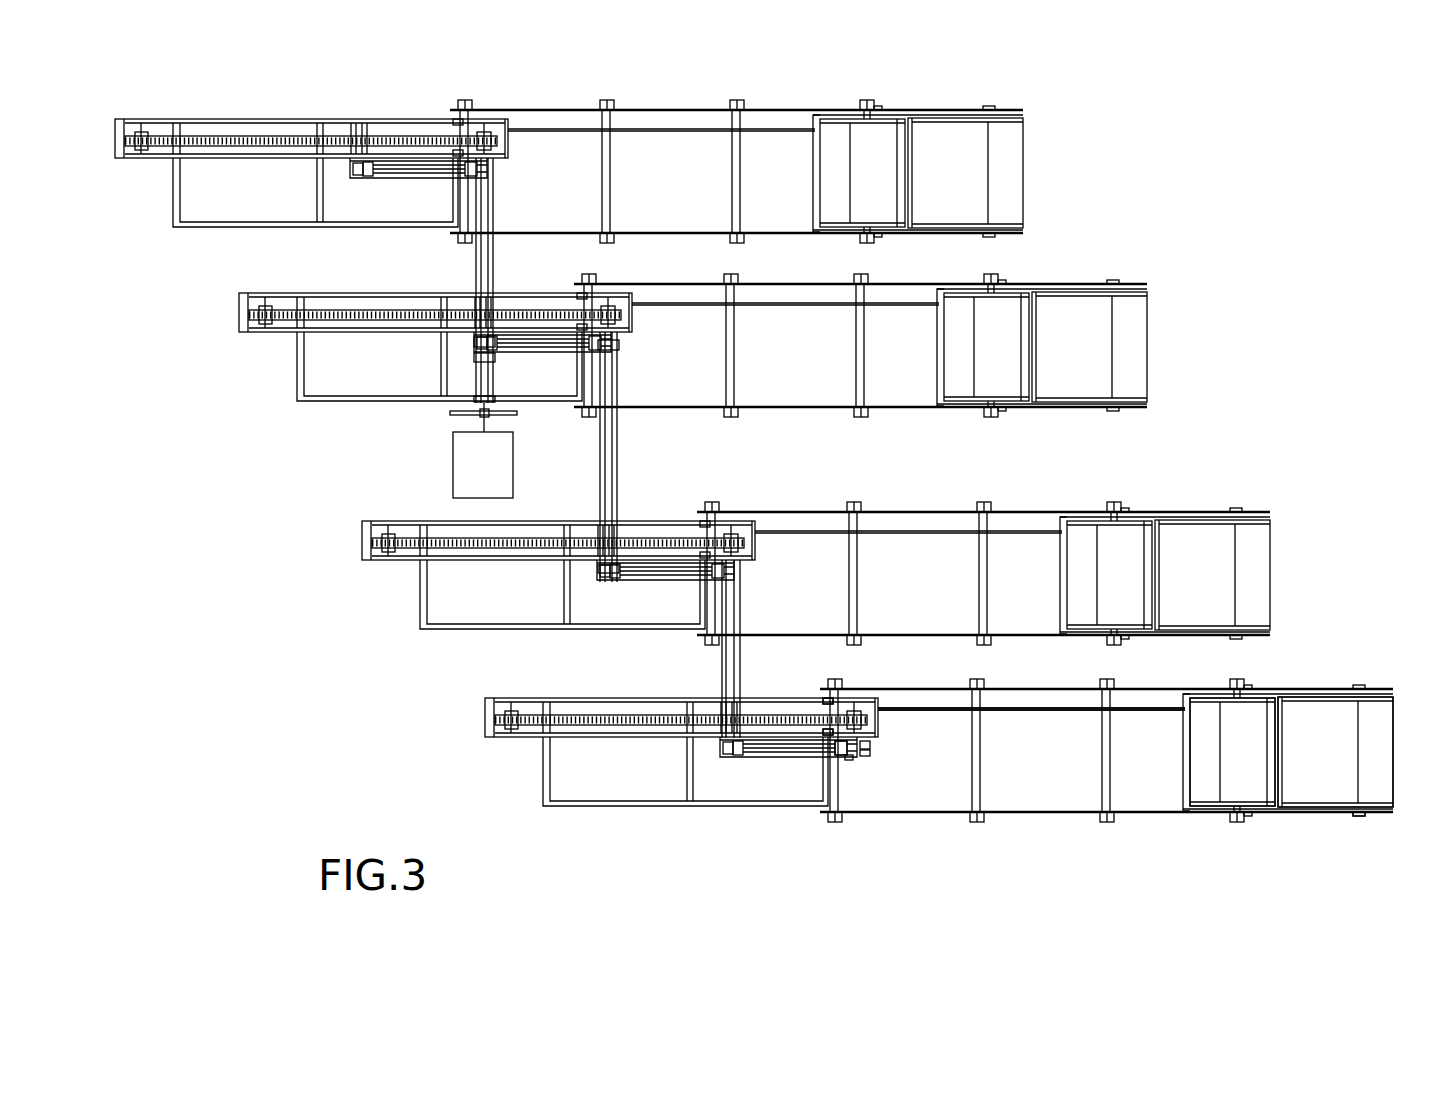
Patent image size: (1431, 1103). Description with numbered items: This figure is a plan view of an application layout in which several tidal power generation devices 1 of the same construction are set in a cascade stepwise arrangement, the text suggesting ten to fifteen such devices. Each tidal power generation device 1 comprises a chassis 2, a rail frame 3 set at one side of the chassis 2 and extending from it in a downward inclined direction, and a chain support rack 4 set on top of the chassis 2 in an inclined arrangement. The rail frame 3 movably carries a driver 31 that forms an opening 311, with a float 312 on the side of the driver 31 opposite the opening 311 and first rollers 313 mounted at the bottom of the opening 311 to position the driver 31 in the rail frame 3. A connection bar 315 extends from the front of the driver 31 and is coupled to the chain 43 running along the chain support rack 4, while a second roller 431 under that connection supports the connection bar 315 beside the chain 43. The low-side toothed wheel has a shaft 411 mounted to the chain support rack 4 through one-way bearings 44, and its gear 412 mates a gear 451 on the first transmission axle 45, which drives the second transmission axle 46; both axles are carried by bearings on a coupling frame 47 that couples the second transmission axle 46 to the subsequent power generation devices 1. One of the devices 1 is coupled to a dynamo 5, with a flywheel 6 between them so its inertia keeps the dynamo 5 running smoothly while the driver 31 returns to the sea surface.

The tidal power generation device 1 is at (283, 405).
The chassis 2 is at (563, 806).
The rail frame 3 is at (930, 813).
The driver 31 is at (1298, 808).
The opening 311 is at (1352, 757).
The float 312 is at (1230, 788).
The first rollers 313 is at (1358, 817).
The connection bar 315 is at (944, 706).
The chain support rack 4 is at (578, 698).
The chain 43 is at (626, 716).
The second roller 431 is at (826, 700).
The shaft 411 is at (869, 743).
The gear 412 is at (871, 752).
The one-way bearings 44 is at (858, 758).
The first transmission axle 45 is at (778, 757).
The gear 451 is at (843, 761).
The second transmission axle 46 is at (730, 673).
The coupling frame 47 is at (740, 657).
The dynamo 5 is at (456, 462).
The flywheel 6 is at (452, 414).